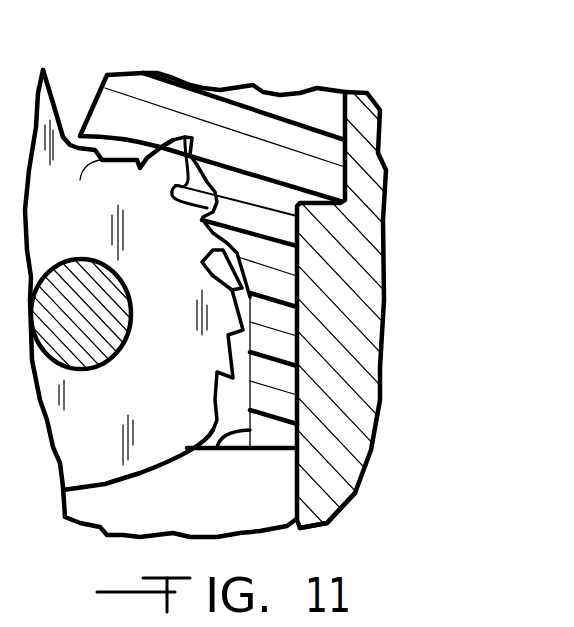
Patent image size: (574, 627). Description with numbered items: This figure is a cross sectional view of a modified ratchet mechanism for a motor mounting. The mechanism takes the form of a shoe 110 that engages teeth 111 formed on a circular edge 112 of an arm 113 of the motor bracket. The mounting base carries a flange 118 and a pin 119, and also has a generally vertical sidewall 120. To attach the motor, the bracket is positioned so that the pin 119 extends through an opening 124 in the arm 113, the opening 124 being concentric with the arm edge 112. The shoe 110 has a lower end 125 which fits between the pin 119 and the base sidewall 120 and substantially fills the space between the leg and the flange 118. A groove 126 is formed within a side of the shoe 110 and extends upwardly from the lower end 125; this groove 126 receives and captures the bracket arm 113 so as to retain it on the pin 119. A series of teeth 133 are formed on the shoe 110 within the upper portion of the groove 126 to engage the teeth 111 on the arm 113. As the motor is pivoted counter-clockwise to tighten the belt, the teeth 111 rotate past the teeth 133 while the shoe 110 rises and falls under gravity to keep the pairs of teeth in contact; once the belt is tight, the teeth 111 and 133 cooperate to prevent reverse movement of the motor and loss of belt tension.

The shoe 110 is at (237, 299).
The teeth 111 is at (201, 150).
The circular edge 112 is at (138, 477).
The arm 113 is at (99, 161).
The flange 118 is at (176, 526).
The pin 119 is at (136, 303).
The sidewall 120 is at (333, 526).
The opening 124 is at (62, 265).
The lower end 125 is at (248, 477).
The groove 126 is at (217, 448).
The teeth 133 is at (151, 217).